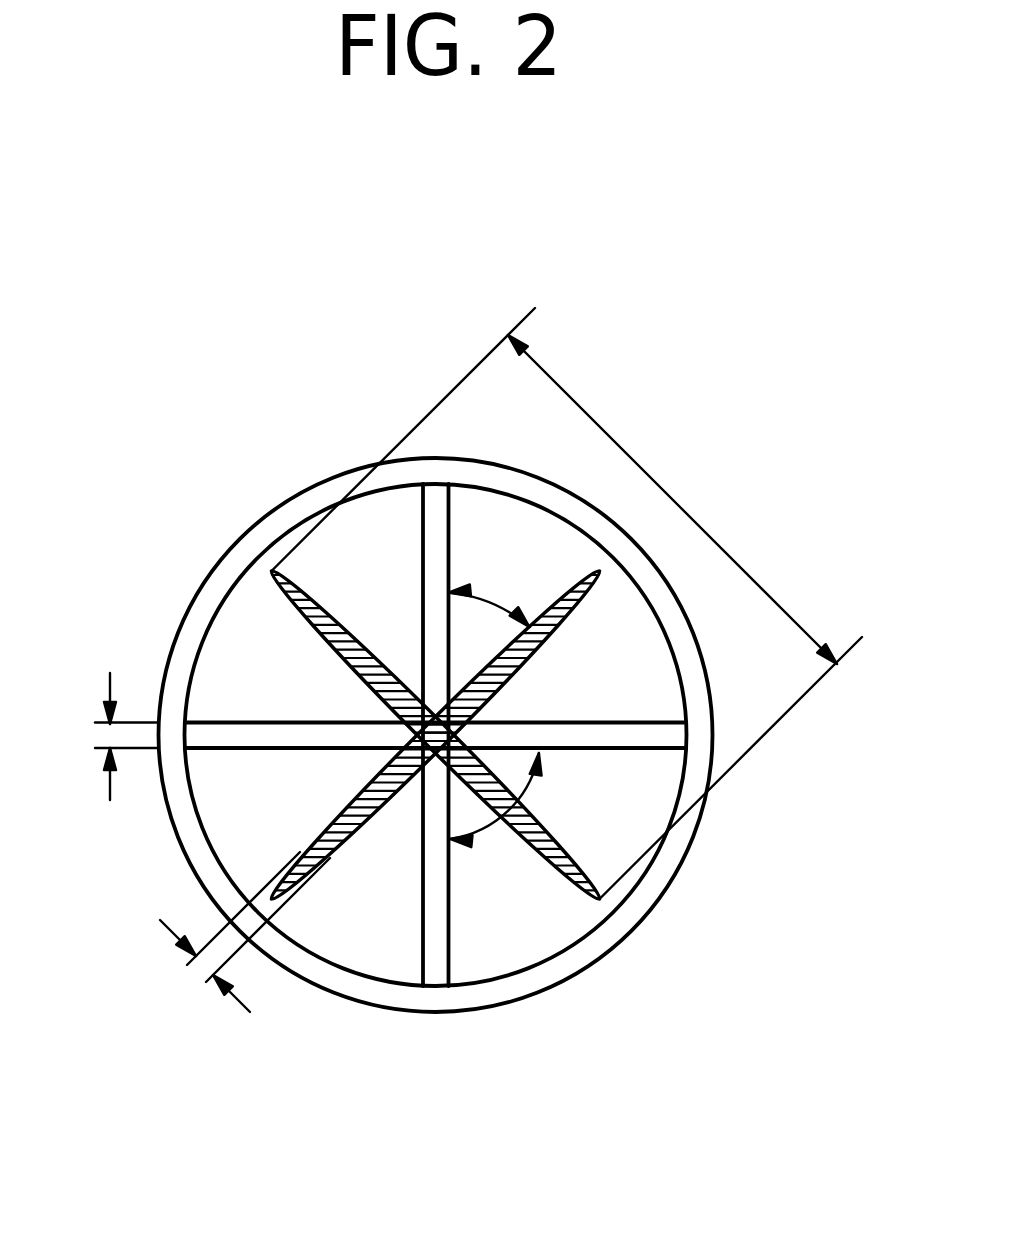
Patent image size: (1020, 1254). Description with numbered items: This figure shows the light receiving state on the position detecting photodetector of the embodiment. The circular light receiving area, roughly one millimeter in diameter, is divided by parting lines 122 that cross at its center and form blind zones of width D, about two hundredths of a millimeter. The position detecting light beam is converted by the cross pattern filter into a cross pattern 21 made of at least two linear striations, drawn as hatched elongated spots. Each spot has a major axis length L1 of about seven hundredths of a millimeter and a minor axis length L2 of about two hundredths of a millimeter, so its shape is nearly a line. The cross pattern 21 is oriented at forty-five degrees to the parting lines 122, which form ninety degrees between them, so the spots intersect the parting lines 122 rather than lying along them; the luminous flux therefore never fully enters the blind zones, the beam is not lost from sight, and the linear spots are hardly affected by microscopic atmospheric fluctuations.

The cross pattern 21 is at (563, 852).
The parting line 122 is at (437, 1011).
The length of the major axis of the spot L1 is at (567, 603).
The length of the minor axis of the spot L2 is at (232, 942).
The width of the parting line D is at (108, 736).